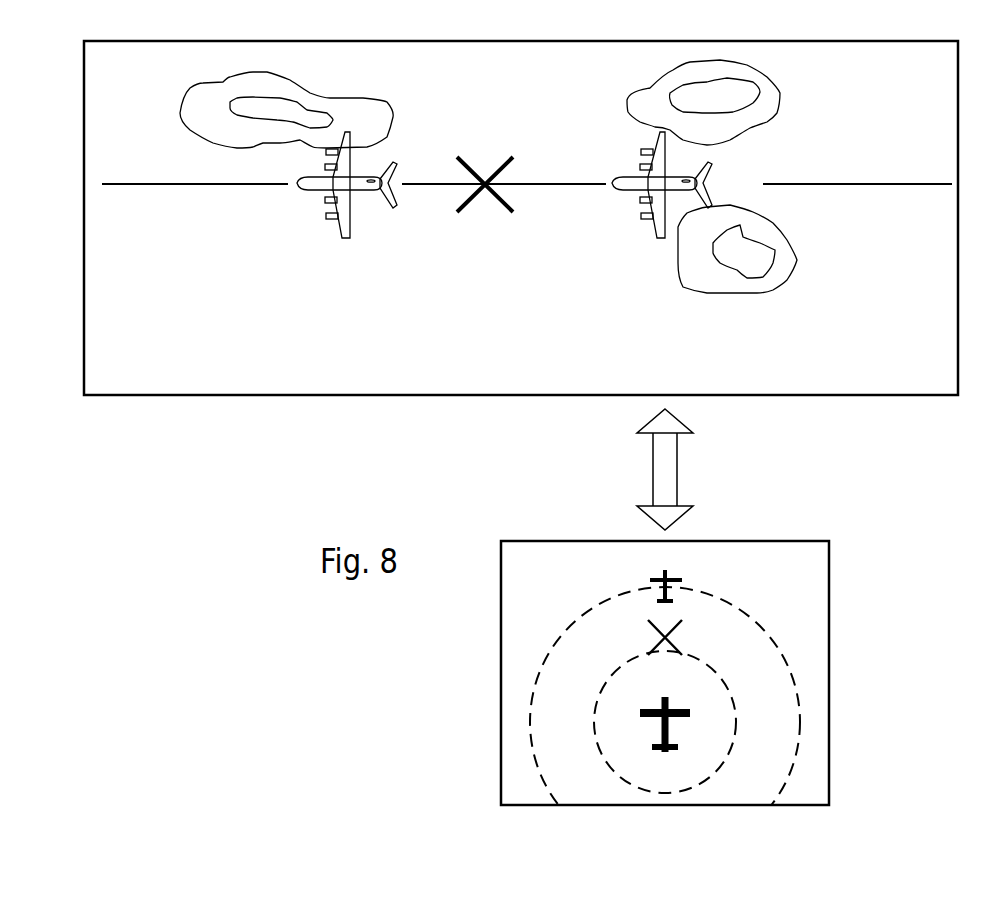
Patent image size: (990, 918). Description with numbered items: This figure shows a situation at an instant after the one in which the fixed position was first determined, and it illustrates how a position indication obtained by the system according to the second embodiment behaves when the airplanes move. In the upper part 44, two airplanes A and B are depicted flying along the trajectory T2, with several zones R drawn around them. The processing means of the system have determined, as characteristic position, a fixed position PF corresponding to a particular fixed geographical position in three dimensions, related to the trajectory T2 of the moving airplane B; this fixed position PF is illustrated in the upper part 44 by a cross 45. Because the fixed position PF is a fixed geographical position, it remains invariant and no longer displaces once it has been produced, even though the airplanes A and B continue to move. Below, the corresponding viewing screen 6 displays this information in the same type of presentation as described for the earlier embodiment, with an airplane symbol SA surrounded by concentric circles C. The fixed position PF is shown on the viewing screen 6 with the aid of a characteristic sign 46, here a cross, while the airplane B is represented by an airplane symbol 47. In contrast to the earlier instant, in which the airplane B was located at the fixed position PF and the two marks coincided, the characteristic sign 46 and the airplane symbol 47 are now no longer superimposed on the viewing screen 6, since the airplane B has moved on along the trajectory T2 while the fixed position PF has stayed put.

The upper part 44 is at (428, 396).
The viewing screen 6 is at (720, 806).
The trajectory T2 is at (195, 186).
The meteorological risk zones R is at (393, 107).
The airplane B is at (363, 195).
The airplane A is at (692, 168).
The cross 45 is at (499, 204).
The fixed position PF is at (505, 136).
The concentric circles C is at (593, 727).
The airplane symbol 47 is at (663, 574).
The characteristic sign 46 is at (669, 638).
The airplane symbol SA is at (660, 755).